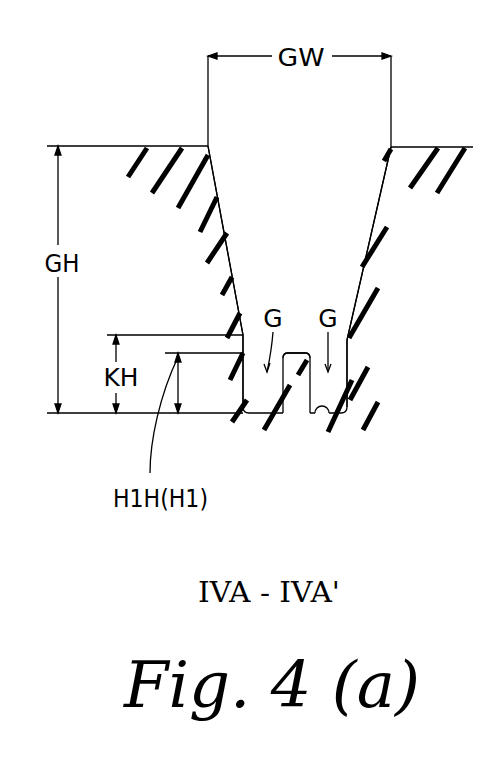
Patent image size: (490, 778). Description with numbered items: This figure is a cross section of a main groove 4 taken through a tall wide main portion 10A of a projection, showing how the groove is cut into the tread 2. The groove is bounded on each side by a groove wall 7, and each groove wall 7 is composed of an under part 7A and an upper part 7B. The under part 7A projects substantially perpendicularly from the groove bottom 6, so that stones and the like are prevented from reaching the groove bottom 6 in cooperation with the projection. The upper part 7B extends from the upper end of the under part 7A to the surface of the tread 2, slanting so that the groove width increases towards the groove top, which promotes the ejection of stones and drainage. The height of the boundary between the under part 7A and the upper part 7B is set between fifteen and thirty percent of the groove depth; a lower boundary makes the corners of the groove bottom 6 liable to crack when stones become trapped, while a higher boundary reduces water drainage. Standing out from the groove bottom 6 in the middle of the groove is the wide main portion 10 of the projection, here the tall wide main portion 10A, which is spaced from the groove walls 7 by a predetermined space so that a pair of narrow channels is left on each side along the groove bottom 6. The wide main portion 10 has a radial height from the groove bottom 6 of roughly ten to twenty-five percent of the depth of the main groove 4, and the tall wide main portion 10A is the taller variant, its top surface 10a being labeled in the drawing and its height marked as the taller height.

The tread 2 is at (417, 147).
The main groove 4 is at (295, 256).
The groove bottom 6 is at (317, 414).
The groove wall 7 is at (295, 276).
The under part 7A is at (250, 341).
The upper part 7B is at (222, 229).
The wide main portion 10 is at (270, 371).
The tall wide main portion 10A is at (270, 371).
The top of ridge 10a is at (296, 352).